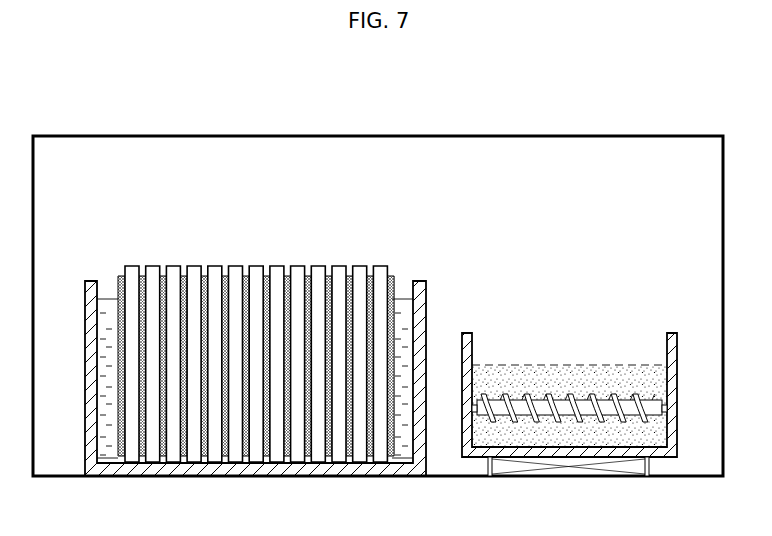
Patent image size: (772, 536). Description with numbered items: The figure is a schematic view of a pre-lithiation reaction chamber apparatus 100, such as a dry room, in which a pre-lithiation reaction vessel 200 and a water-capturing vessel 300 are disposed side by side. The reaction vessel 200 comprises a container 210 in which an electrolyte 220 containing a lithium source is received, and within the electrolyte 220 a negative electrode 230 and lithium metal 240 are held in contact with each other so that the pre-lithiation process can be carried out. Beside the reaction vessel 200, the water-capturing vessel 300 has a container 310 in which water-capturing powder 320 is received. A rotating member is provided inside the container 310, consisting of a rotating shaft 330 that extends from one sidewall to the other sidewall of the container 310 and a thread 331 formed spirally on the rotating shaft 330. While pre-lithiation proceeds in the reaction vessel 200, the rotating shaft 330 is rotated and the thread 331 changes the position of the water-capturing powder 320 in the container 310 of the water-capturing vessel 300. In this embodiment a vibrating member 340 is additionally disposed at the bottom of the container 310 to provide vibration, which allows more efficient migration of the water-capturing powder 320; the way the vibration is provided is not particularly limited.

The reaction chamber apparatus 100 is at (452, 135).
The reaction vessel 200 is at (288, 337).
The container 210 is at (427, 316).
The electrolyte 220 is at (402, 300).
The negative electrode 230 is at (298, 271).
The lithium metal 240 is at (348, 271).
The water-capturing vessel 300 is at (582, 374).
The container 310 is at (678, 345).
The water-capturing powder 320 is at (577, 378).
The rotating shaft 330 is at (522, 405).
The thread 331 is at (593, 400).
The vibrating member 340 is at (620, 472).